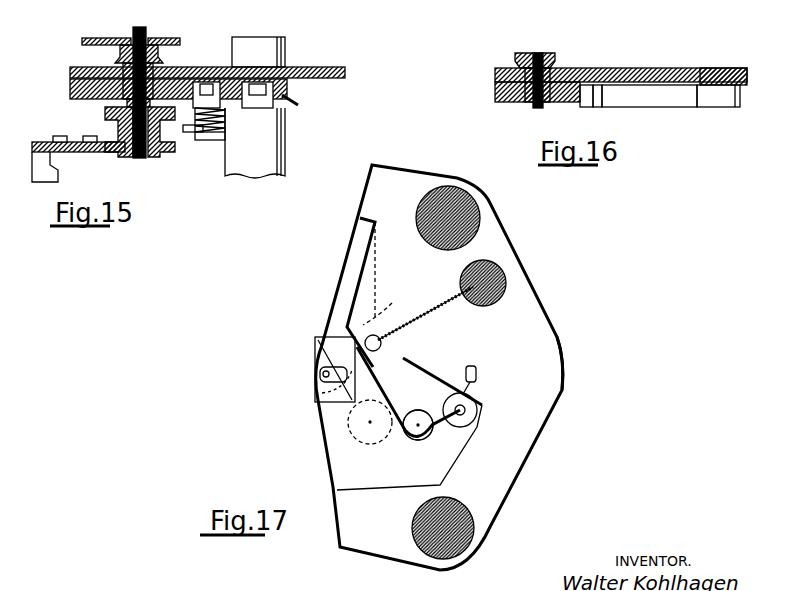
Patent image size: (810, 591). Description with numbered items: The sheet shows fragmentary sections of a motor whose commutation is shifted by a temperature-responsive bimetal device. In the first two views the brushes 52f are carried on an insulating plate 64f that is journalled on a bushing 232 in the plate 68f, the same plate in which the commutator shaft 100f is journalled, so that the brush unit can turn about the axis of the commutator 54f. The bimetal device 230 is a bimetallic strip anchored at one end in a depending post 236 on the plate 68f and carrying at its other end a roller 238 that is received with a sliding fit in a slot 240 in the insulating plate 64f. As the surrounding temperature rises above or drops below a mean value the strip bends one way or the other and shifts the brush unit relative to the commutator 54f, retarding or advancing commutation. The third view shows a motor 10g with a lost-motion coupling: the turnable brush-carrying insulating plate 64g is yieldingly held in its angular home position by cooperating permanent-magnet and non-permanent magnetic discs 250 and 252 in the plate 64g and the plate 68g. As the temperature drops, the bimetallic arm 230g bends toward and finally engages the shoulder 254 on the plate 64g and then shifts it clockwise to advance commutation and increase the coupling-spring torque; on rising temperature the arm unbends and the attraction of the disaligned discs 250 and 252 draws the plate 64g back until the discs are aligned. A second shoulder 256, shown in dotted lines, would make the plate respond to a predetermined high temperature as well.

In FIG. 15, the plate 68f is at (300, 68).
In FIG. 16, the plate 68f is at (636, 68).
In FIG. 15, the insulating plate 64f is at (86, 99).
In FIG. 16, the insulating plate 64f is at (503, 102).
In FIG. 15, the bushing 232 is at (124, 78).
In FIG. 16, the bushing 232 is at (551, 80).
In FIG. 15, the commutator shaft 100f is at (138, 159).
In FIG. 16, the commutator shaft 100f is at (537, 55).
In FIG. 15, the commutator 54f is at (156, 158).
In FIG. 15, the brushes 52f is at (200, 133).
In FIG. 16, the slot 240 is at (586, 105).
In FIG. 16, the roller 238 is at (598, 100).
In FIG. 16, the bimetal device 230 is at (653, 107).
In FIG. 16, the depending post 236 is at (715, 107).
In FIG. 17, the motor 10g is at (522, 271).
In FIG. 17, the plate 68g is at (540, 352).
In FIG. 17, the insulating plate 64g is at (375, 489).
In FIG. 17, the shoulder 256 is at (391, 312).
In FIG. 17, the bimetallic arm 230g is at (432, 315).
In FIG. 17, the shoulder 254 is at (385, 350).
In FIG. 17, the permanent-magnet disc 250 is at (360, 445).
In FIG. 17, the non-permanent magnetic disc 252 is at (411, 439).